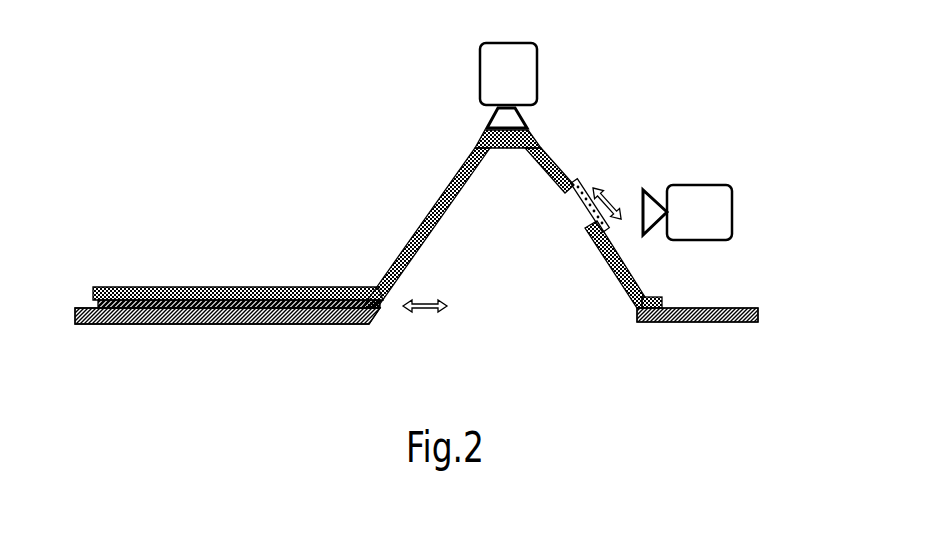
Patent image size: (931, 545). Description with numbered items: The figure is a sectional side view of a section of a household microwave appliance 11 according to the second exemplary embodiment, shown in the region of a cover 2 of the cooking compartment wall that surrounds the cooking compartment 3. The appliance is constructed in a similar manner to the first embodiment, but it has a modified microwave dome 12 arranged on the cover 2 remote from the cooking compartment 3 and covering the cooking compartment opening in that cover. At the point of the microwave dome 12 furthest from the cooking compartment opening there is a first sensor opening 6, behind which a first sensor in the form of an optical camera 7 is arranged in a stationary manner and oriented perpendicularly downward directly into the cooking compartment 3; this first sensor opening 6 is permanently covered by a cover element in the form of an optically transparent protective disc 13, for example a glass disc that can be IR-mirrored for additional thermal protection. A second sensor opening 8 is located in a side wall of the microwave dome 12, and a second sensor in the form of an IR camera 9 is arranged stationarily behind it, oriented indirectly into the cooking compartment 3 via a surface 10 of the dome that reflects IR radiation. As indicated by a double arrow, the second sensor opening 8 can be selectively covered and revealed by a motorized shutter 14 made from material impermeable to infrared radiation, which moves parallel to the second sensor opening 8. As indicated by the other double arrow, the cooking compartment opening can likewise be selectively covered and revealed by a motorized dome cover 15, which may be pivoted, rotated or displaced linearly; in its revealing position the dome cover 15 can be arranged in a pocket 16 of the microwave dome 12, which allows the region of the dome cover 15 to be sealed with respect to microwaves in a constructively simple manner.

The cover 2 is at (82, 306).
The cooking compartment 3 is at (276, 365).
The first sensor opening 6 is at (510, 157).
The optical camera 7 is at (541, 78).
The second sensor opening 8 is at (580, 218).
The IR camera 9 is at (702, 185).
The surface 10 is at (442, 217).
The household microwave appliance 11 is at (168, 91).
The microwave dome 12 is at (421, 223).
The protective disc 13 is at (480, 133).
The shutter 14 is at (586, 186).
The dome cover 15 is at (146, 300).
The pocket 16 is at (246, 288).